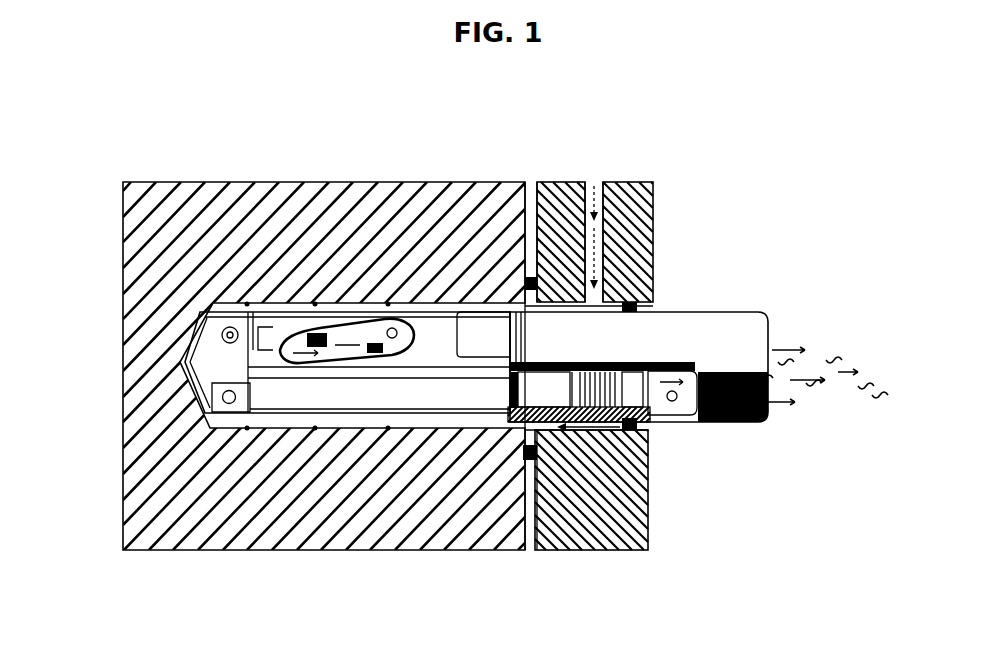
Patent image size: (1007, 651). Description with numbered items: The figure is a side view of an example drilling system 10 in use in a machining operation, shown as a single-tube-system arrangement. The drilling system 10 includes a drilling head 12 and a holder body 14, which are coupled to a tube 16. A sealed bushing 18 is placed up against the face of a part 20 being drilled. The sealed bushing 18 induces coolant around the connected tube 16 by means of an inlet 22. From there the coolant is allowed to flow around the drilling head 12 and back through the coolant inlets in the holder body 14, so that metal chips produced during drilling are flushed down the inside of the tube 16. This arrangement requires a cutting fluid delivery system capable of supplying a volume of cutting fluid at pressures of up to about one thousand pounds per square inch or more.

The drilling system 10 is at (178, 325).
The drilling head 12 is at (230, 323).
The holder body 14 is at (377, 398).
The tube 16 is at (735, 310).
The sealed bushing 18 is at (675, 225).
The part 20 is at (525, 198).
The inlet 22 is at (600, 182).